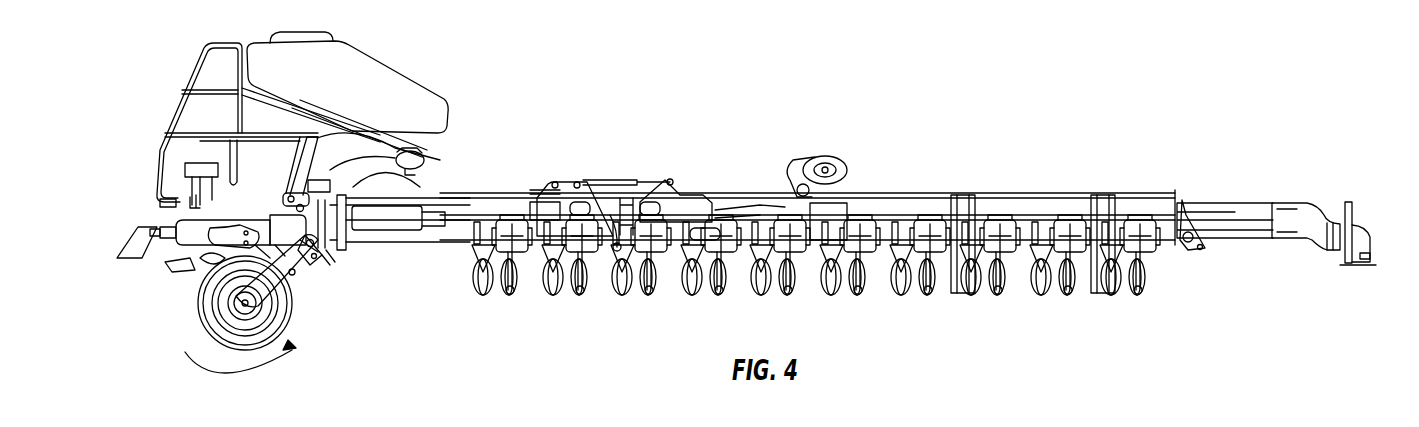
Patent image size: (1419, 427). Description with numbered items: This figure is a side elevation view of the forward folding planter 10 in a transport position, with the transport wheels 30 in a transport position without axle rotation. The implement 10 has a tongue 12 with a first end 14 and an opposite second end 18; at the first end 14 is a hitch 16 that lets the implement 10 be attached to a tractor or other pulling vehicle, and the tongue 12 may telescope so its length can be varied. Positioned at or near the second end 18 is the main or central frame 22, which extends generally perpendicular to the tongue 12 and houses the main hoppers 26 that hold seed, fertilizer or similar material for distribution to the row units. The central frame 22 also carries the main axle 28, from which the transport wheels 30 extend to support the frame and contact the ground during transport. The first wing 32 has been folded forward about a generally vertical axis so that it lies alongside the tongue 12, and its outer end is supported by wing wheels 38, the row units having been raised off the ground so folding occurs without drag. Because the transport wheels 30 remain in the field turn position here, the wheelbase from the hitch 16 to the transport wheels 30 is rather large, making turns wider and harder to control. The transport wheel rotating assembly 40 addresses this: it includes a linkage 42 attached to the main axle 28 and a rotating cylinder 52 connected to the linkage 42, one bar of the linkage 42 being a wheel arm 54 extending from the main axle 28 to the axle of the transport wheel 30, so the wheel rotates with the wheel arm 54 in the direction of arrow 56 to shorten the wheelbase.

The forward folding planter 10 is at (913, 80).
The tongue 12 is at (1213, 205).
The first end 14 is at (1287, 202).
The hitch 16 is at (1363, 228).
The second end 18 is at (400, 232).
The main or central frame 22 is at (428, 161).
The main hoppers 26 is at (351, 47).
The main axle 28 is at (318, 261).
The transport wheels 30 is at (207, 315).
The first wing 32 is at (1033, 193).
The wing wheels 38 is at (960, 297).
The transport wheel rotating assembly 40 is at (284, 184).
The linkage 42 is at (270, 228).
The rotating cylinder 52 is at (307, 152).
The wheel arm 54 is at (292, 279).
The arrow 56 is at (267, 377).